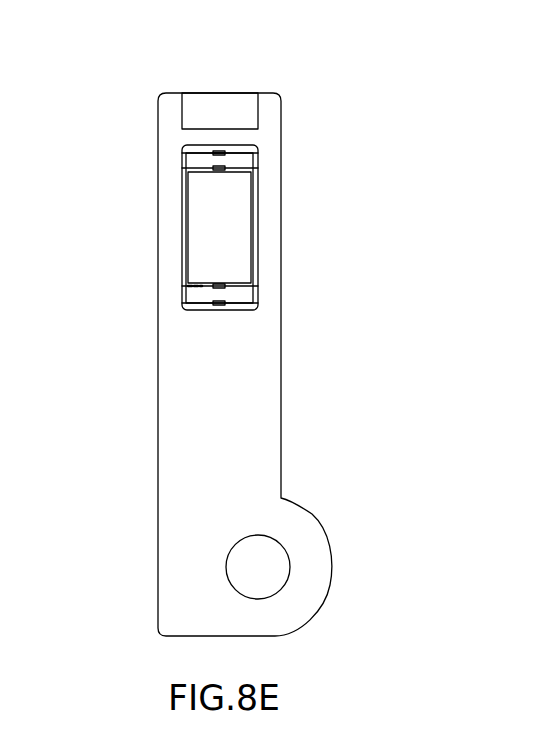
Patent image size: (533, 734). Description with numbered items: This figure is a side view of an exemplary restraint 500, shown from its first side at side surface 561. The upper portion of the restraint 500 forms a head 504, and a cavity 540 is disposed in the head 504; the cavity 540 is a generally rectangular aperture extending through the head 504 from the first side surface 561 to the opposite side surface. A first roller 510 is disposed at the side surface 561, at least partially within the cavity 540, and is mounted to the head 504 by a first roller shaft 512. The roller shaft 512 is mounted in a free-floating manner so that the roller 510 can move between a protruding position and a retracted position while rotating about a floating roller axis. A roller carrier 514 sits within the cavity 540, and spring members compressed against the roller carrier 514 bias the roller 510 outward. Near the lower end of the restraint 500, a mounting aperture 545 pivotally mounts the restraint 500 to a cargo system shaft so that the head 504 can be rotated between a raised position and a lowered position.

The restraint 500 is at (93, 92).
The head 504 is at (282, 119).
The first roller 510 is at (199, 232).
The first roller shaft 512 is at (186, 287).
The roller carrier 514 is at (237, 160).
The cavity 540 is at (186, 193).
The mounting aperture 545 is at (280, 537).
The side surface 561 is at (212, 454).